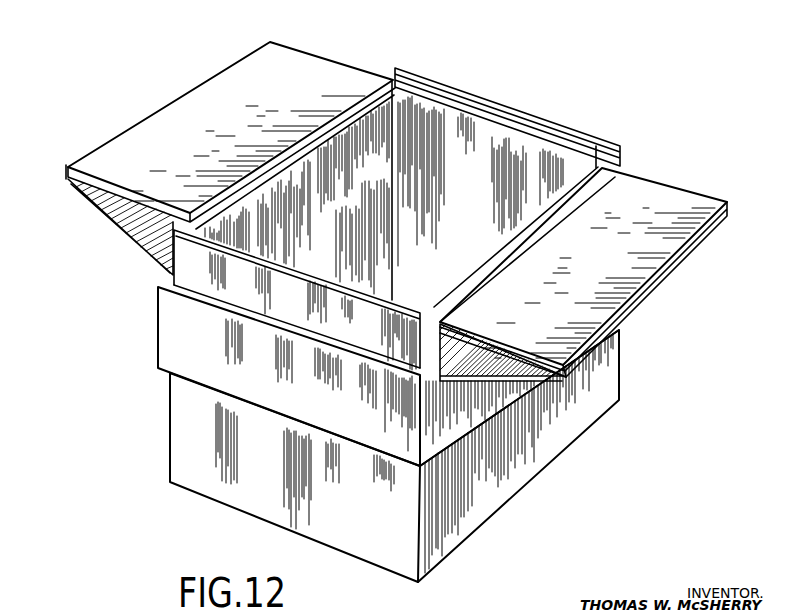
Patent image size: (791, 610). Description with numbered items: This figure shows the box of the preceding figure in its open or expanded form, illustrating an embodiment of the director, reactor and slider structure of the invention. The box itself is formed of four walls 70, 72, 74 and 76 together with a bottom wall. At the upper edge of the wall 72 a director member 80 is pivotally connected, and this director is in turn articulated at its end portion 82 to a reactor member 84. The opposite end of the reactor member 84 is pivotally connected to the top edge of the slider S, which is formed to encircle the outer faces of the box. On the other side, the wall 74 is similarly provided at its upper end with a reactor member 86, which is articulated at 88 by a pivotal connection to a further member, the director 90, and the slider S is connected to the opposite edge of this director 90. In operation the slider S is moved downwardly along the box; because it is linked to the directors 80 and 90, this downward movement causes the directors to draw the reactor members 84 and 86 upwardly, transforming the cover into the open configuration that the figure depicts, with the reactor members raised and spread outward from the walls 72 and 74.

The wall 70 is at (217, 481).
The wall 72 is at (492, 498).
The wall 74 is at (350, 252).
The wall 76 is at (488, 231).
The director member 80 is at (519, 378).
The end portion 82 is at (637, 300).
The reactor member 84 is at (647, 183).
The reactor member 86 is at (185, 110).
The articulation 88 is at (68, 170).
The director 90 is at (127, 233).
The slider S is at (167, 320).